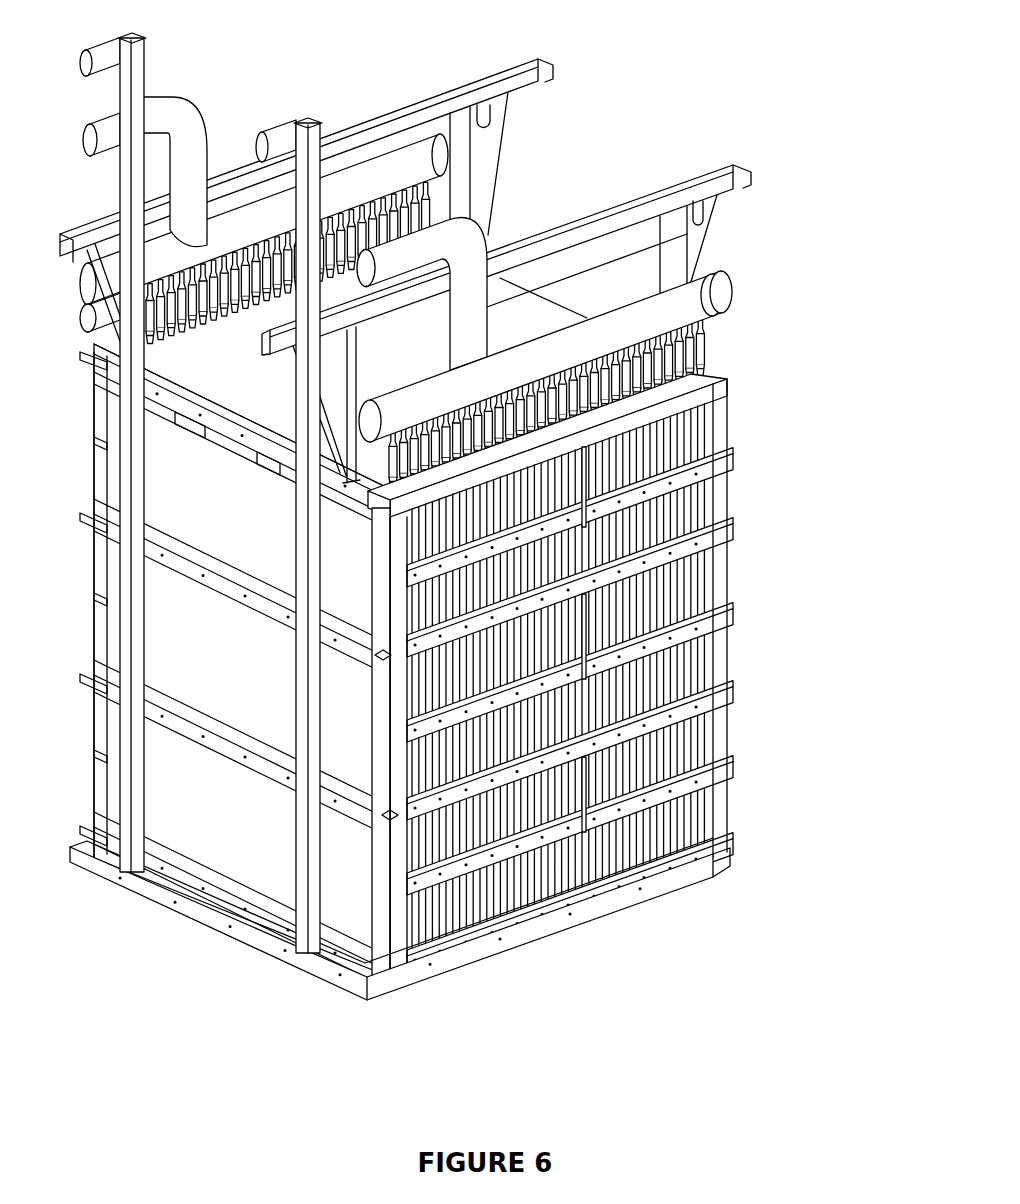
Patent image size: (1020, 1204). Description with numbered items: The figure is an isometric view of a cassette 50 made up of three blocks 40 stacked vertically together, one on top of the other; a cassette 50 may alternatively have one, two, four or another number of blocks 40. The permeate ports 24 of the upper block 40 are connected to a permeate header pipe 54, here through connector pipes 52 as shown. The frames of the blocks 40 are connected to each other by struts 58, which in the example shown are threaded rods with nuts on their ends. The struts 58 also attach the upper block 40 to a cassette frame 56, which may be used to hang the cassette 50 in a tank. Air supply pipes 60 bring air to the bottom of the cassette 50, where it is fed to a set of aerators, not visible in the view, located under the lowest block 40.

The cassette 50 is at (465, 526).
The air supply pipes 60 is at (305, 918).
The cassette frame 56 is at (736, 172).
The permeate header pipe 54 is at (586, 354).
The connector pipes 52 is at (703, 352).
The permeate ports 24 is at (713, 375).
The blocks 40 is at (704, 764).
The struts 58 is at (588, 672).